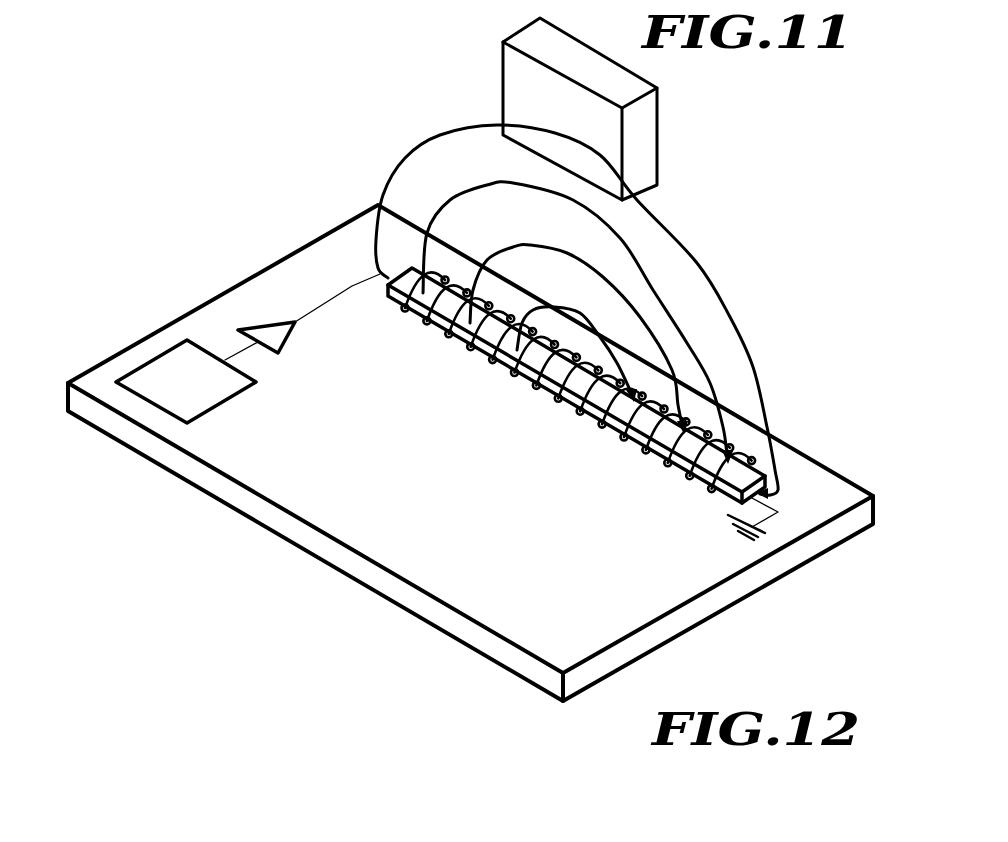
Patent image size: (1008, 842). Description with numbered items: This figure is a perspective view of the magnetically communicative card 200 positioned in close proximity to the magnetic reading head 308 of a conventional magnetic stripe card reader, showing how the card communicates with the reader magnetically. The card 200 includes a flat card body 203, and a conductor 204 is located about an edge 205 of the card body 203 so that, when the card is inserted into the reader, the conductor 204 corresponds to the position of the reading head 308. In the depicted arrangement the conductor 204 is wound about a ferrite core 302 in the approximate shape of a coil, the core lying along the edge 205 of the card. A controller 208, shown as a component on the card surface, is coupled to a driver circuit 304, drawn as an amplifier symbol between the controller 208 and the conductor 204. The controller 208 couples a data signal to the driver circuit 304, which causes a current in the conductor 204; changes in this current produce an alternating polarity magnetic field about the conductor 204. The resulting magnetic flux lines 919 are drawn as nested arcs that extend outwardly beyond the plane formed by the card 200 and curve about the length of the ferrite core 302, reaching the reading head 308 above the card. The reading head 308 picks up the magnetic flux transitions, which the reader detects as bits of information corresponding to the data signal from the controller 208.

The magnetically communicative card 200 is at (808, 558).
The card body 203 is at (605, 602).
The conductor 204 is at (350, 287).
The edge 205 is at (818, 462).
The controller 208 is at (233, 400).
The ferrite core 302 is at (753, 477).
The driver circuit 304 is at (288, 340).
The magnetic reading head 308 is at (512, 35).
The magnetic flux lines 919 is at (697, 263).